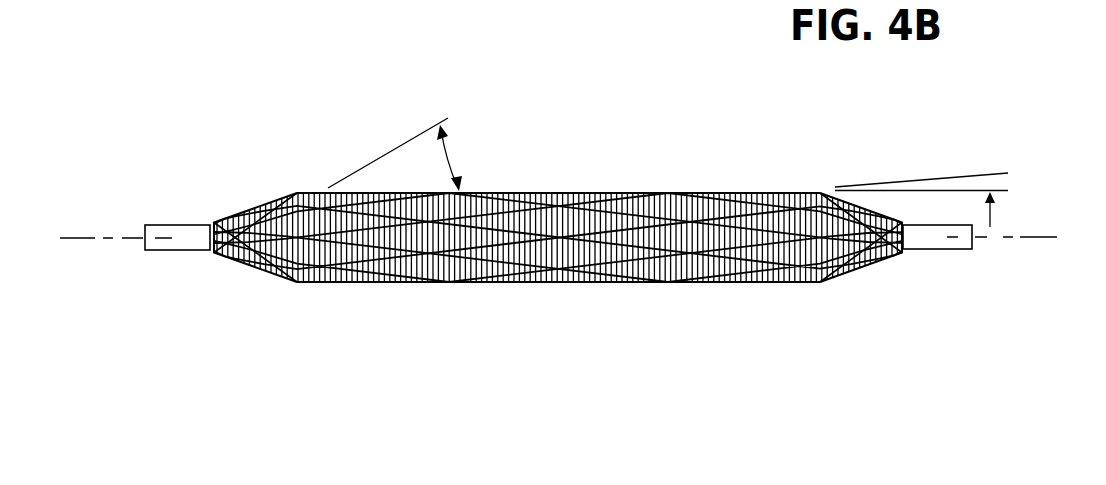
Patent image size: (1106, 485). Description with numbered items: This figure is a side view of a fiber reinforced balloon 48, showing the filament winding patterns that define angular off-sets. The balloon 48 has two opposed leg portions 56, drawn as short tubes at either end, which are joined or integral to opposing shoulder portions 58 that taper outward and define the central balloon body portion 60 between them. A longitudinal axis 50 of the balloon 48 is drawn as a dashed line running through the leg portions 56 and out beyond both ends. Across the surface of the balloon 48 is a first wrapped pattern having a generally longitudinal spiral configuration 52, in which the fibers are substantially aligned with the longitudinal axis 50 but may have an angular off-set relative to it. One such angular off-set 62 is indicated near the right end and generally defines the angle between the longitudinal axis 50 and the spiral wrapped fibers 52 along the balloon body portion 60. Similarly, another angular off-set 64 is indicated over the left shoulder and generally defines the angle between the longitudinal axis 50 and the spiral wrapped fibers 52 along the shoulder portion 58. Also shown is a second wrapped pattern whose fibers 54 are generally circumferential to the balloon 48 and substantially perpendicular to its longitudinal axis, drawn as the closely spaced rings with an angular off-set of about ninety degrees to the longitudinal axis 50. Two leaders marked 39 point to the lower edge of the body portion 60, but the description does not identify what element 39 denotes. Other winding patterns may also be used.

The wire rings 39 is at (587, 280).
The balloon 48 is at (558, 251).
The longitudinal axis 50 is at (205, 0).
The longitudinal spiral configuration 52 is at (650, 193).
The fibers 54 is at (718, 205).
The leg portions 56 is at (143, 307).
The shoulder portions 58 is at (218, 307).
The balloon body portion 60 is at (298, 307).
The angular off-set 62 is at (978, 166).
The angular off-set 64 is at (450, 157).